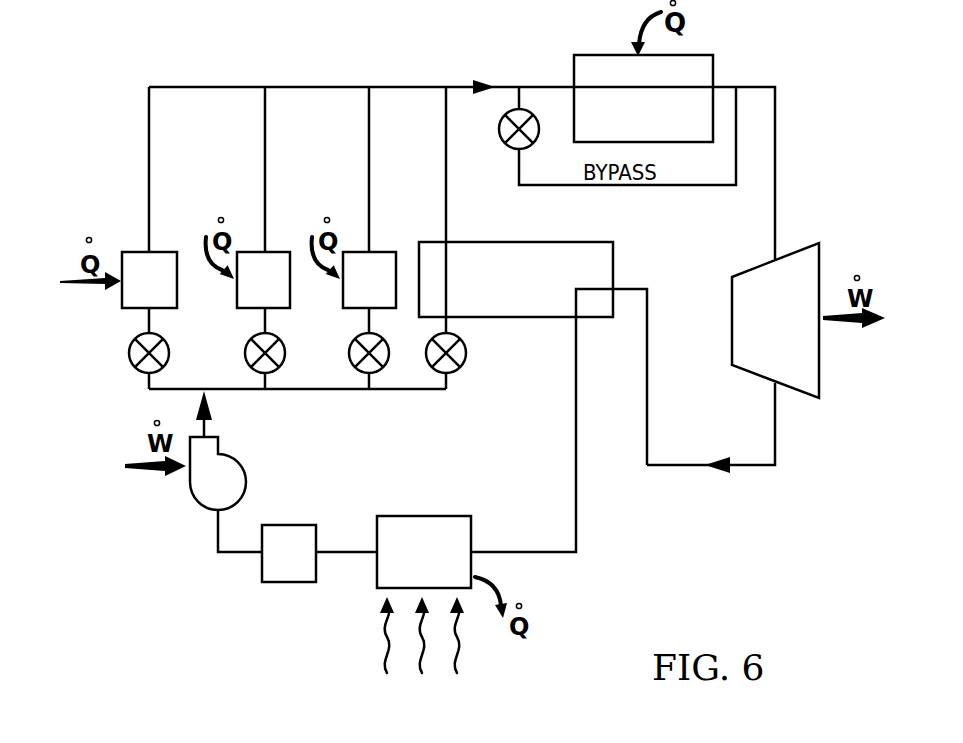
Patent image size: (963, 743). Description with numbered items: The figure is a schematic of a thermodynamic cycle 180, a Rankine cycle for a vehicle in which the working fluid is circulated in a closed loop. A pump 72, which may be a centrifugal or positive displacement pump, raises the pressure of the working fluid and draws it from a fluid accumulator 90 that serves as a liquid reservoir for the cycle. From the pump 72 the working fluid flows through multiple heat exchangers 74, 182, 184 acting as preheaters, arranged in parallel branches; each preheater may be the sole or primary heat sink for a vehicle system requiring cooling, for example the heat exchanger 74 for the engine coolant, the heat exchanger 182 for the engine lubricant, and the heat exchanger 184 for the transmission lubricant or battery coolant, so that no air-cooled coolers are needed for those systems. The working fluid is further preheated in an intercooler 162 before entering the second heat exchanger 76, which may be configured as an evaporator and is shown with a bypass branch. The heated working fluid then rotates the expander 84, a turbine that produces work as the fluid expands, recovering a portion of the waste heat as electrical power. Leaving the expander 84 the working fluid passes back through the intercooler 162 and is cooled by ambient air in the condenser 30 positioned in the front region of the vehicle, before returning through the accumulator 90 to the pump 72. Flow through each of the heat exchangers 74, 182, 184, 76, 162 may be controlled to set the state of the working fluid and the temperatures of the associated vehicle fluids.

The first heat exchanger 74 is at (132, 252).
The heat exchanger 182 is at (273, 252).
The heat exchanger 184 is at (381, 252).
The intercooler 162 is at (593, 317).
The second heat exchanger 76 is at (713, 70).
The expander 84 is at (819, 398).
The pump 72 is at (189, 487).
The fluid accumulator 90 is at (293, 525).
The condenser 30 is at (434, 560).
The thermodynamic cycle 180 is at (693, 502).